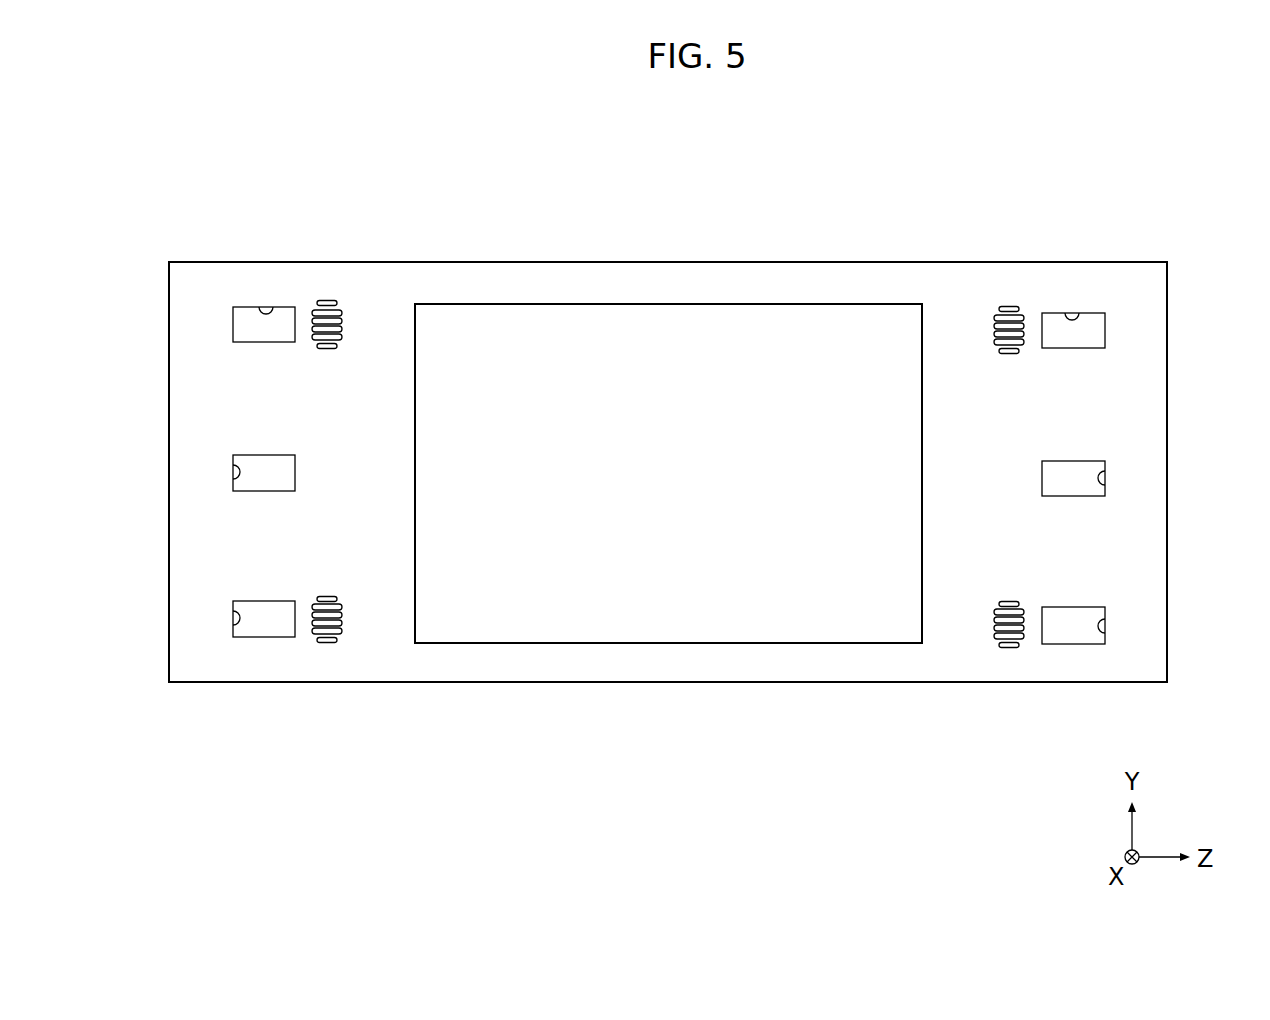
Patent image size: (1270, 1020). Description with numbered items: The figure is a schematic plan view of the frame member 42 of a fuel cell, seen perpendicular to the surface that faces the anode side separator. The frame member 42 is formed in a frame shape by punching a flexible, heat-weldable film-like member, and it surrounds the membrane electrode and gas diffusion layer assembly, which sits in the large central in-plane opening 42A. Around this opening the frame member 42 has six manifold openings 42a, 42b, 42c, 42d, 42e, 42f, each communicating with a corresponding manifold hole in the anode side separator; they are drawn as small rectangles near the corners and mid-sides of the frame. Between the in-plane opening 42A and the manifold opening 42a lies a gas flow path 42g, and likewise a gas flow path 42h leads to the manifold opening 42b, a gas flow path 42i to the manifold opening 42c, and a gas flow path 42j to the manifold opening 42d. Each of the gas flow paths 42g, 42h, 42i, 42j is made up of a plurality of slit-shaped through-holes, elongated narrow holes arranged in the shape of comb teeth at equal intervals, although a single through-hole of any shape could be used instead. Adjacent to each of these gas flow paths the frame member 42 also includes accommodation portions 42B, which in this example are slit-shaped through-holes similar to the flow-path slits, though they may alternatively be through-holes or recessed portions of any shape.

The frame member 42 is at (1085, 180).
The in-plane opening 42A is at (689, 304).
The accommodation portion 42B is at (328, 300).
The manifold opening 42a is at (1068, 318).
The manifold opening 42b is at (233, 626).
The manifold opening 42c is at (1105, 628).
The manifold opening 42d is at (262, 312).
The manifold opening 42e is at (233, 479).
The manifold opening 42f is at (1105, 482).
The gas flow path 42g is at (994, 326).
The gas flow path 42h is at (342, 623).
The gas flow path 42i is at (994, 628).
The gas flow path 42j is at (342, 321).